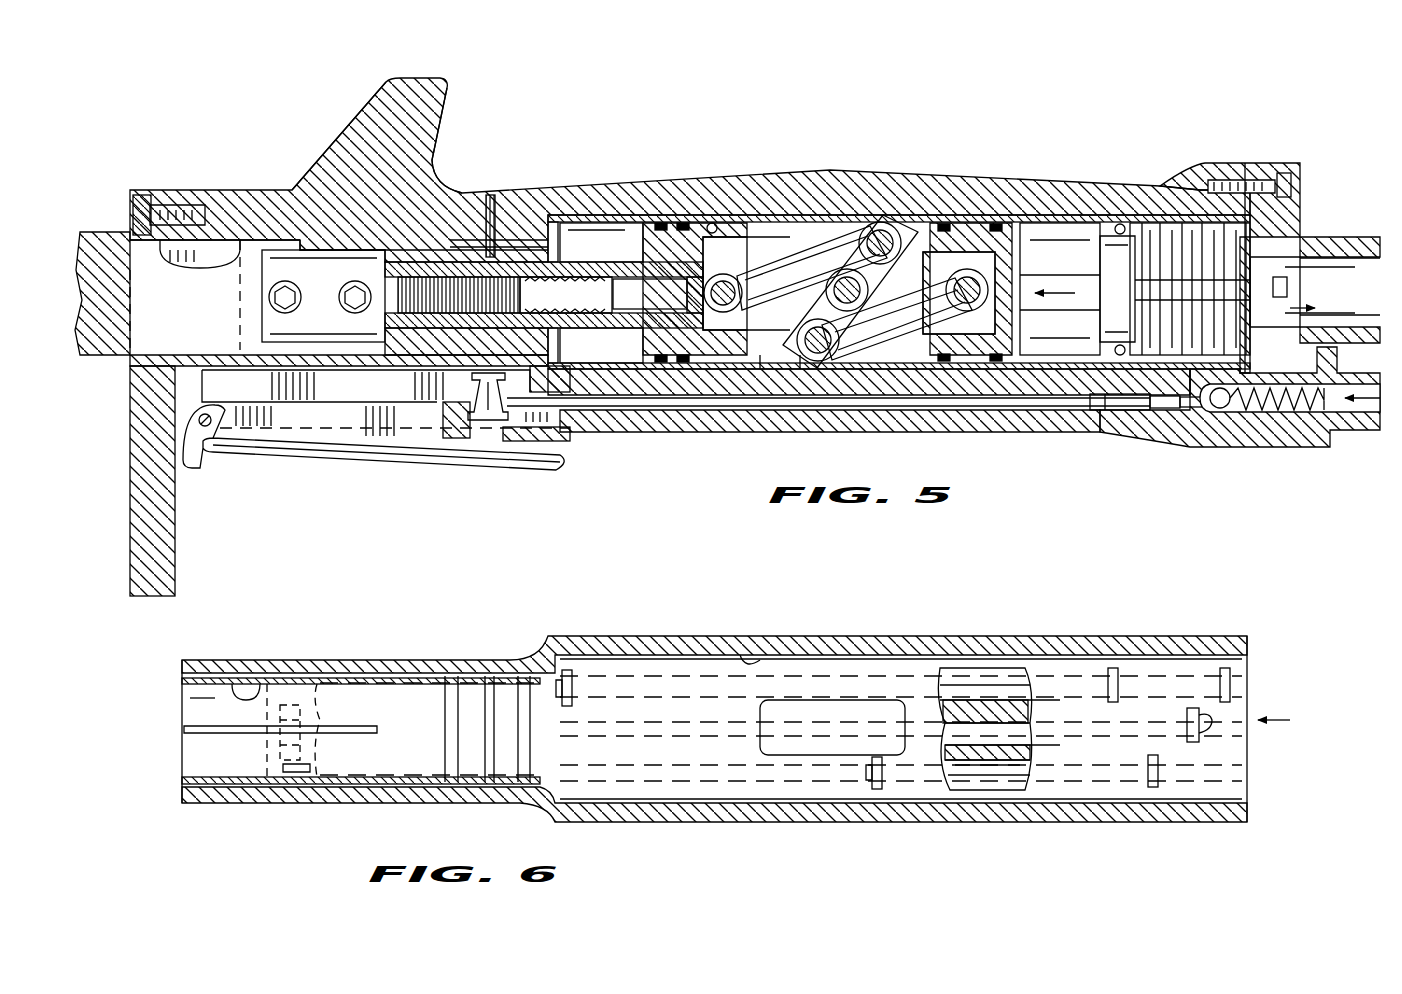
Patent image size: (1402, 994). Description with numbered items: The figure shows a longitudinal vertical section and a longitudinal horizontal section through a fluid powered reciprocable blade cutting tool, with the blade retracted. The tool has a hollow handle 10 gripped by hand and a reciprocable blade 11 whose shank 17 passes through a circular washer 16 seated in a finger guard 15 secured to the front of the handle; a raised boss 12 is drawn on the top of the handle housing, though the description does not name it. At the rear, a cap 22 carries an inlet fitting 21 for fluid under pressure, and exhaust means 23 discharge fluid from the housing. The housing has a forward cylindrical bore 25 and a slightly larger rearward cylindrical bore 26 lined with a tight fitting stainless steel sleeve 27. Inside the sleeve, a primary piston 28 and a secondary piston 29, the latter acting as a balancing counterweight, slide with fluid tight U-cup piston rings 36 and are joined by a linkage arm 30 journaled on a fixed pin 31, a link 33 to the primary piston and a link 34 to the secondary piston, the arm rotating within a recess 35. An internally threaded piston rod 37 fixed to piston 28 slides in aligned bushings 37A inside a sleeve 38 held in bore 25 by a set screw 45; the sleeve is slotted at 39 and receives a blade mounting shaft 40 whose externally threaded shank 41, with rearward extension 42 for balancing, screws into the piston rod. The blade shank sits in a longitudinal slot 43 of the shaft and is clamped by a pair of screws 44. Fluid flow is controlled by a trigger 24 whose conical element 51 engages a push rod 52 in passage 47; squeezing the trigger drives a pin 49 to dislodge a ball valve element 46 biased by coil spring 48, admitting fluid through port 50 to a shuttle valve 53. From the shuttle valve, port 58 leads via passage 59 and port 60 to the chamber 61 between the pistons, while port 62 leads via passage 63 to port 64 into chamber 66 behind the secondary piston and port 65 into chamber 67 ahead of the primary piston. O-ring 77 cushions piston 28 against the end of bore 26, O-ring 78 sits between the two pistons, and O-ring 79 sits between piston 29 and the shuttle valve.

In FIG. 5, the hollow handle 10 is at (1023, 187).
In FIG. 6, the hollow handle 10 is at (680, 637).
In FIG. 5, the reciprocable blade 11 is at (97, 372).
In FIG. 5, the boss 12 is at (373, 100).
In FIG. 5, the finger guard 15 is at (148, 598).
In FIG. 5, the circular washer 16 is at (158, 257).
In FIG. 5, the shank 17 is at (238, 267).
In FIG. 5, the inlet fitting 21 is at (1327, 442).
In FIG. 5, the rear cover or cap 22 is at (1280, 165).
In FIG. 5, the exhaust means 23 is at (1347, 237).
In FIG. 5, the trigger 24 is at (395, 458).
In FIG. 5, the forward cylindrical bore 25 is at (287, 233).
In FIG. 6, the forward cylindrical bore 25 is at (248, 688).
In FIG. 5, the rearward cylindrical bore 26 is at (583, 263).
In FIG. 6, the rearward cylindrical bore 26 is at (770, 657).
In FIG. 5, the sleeve 27 is at (683, 233).
In FIG. 5, the primary piston 28 is at (640, 358).
In FIG. 5, the secondary piston 29 is at (965, 374).
In FIG. 5, the linkage arm 30 is at (885, 258).
In FIG. 5, the transverse horizontal shaft or pin 31 is at (838, 277).
In FIG. 5, the link 33 is at (783, 257).
In FIG. 5, the link 34 is at (863, 345).
In FIG. 5, the recess 35 is at (822, 205).
In FIG. 6, the recess 35 is at (860, 713).
In FIG. 5, the U-cup piston rings 36 is at (943, 223).
In FIG. 5, the piston rod 37 is at (617, 247).
In FIG. 5, the bushings 37A is at (472, 237).
In FIG. 5, the sleeve 38 is at (380, 247).
In FIG. 6, the sleeve 38 is at (210, 698).
In FIG. 5, the slot 39 is at (207, 240).
In FIG. 6, the slot 39 is at (208, 742).
In FIG. 5, the blade mounting shaft 40 is at (270, 320).
In FIG. 5, the shank 41 is at (417, 367).
In FIG. 5, the rearward extension 42 is at (612, 300).
In FIG. 6, the longitudinal slot 43 is at (288, 727).
In FIG. 5, the screws 44 is at (338, 298).
In FIG. 6, the screws 44 is at (297, 774).
In FIG. 5, the set screw 45 is at (490, 200).
In FIG. 5, the ball valve element 46 is at (1220, 409).
In FIG. 5, the longitudinal passage 47 is at (1182, 412).
In FIG. 6, the longitudinal passage 47 is at (1030, 690).
In FIG. 5, the coil spring 48 is at (1280, 422).
In FIG. 5, the pin 49 is at (1137, 408).
In FIG. 5, the port 50 is at (1195, 420).
In FIG. 6, the port 50 is at (1193, 742).
In FIG. 5, the conical element 51 is at (490, 422).
In FIG. 5, the push rod 52 is at (703, 408).
In FIG. 5, the shuttle valve 53 is at (1158, 220).
In FIG. 6, the port 58 is at (1153, 785).
In FIG. 6, the longitudinally extending passage 59 is at (997, 770).
In FIG. 6, the port 60 is at (877, 790).
In FIG. 5, the chamber 61 is at (763, 358).
In FIG. 6, the port 62 is at (1230, 680).
In FIG. 6, the longitudinal passage 63 is at (980, 680).
In FIG. 6, the port 64 is at (1120, 688).
In FIG. 6, the port 65 is at (568, 667).
In FIG. 5, the chamber 66 is at (1060, 233).
In FIG. 5, the chamber 67 is at (650, 223).
In FIG. 5, the O-ring 77 is at (555, 223).
In FIG. 5, the O-ring 78 is at (713, 227).
In FIG. 5, the O-ring 79 is at (1120, 223).